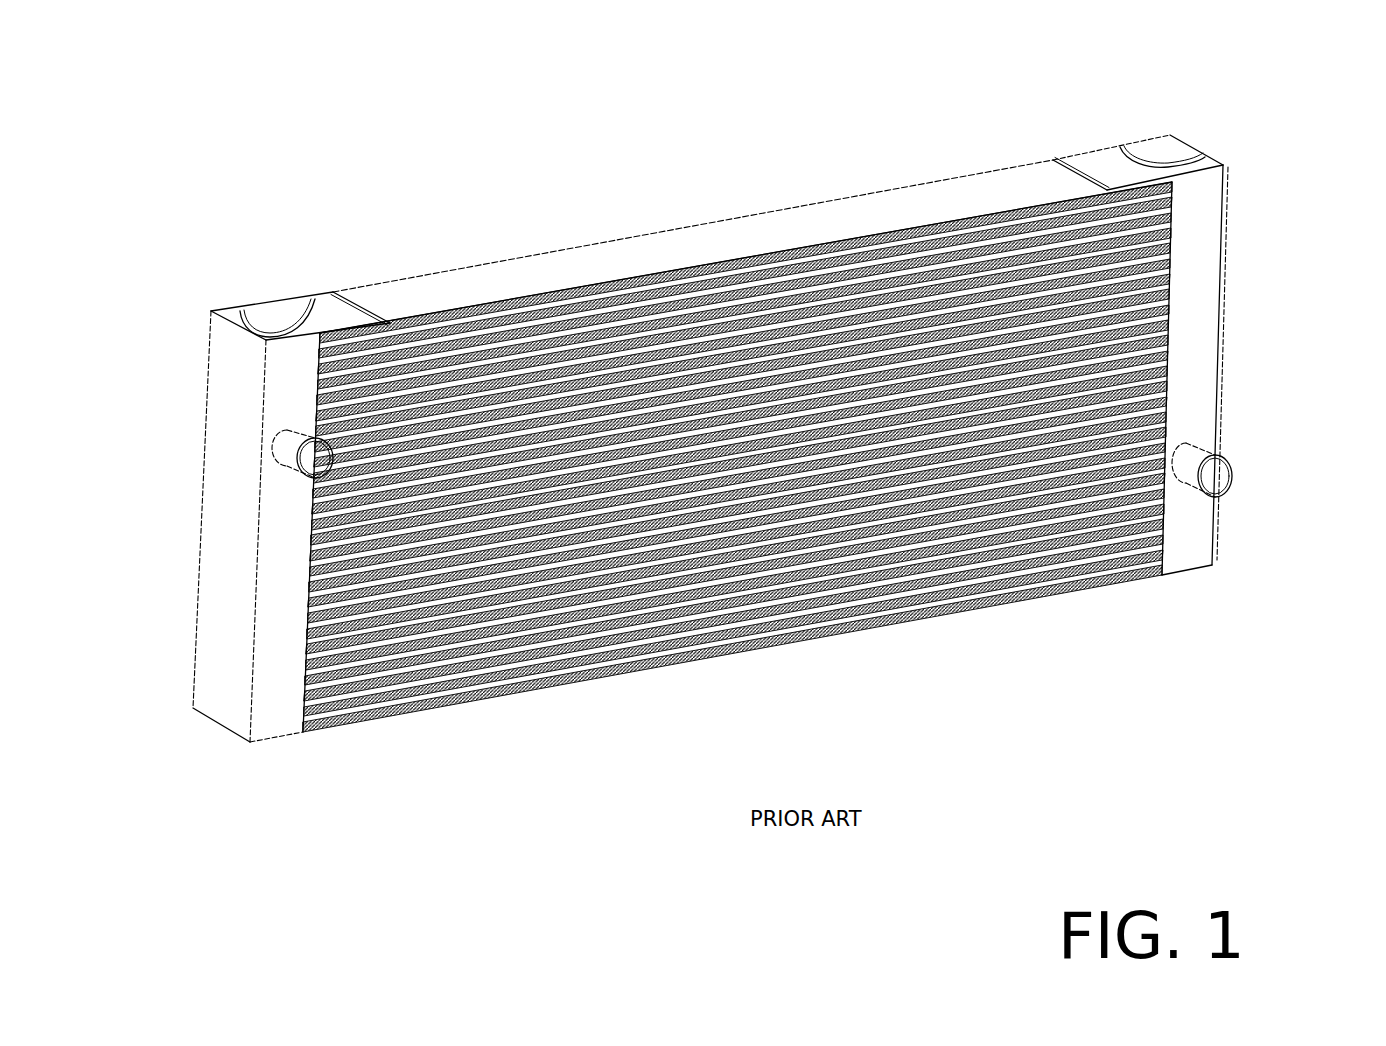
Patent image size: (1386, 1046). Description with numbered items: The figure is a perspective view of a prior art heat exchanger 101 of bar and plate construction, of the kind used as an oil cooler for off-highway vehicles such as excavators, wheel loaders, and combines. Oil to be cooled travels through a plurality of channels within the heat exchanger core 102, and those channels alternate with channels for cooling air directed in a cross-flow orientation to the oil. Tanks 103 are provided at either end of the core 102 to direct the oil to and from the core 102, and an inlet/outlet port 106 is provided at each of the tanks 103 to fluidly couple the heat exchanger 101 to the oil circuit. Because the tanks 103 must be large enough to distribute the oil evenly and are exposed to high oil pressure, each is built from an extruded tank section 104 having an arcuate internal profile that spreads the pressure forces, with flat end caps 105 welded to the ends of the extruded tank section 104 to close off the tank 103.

The heat exchanger 101 is at (734, 430).
The heat exchanger core 102 is at (958, 593).
The tanks 103 is at (225, 707).
The extruded tank section 104 is at (235, 315).
The flat end caps 105 is at (270, 322).
The inlet/outlet ports 106 is at (299, 467).